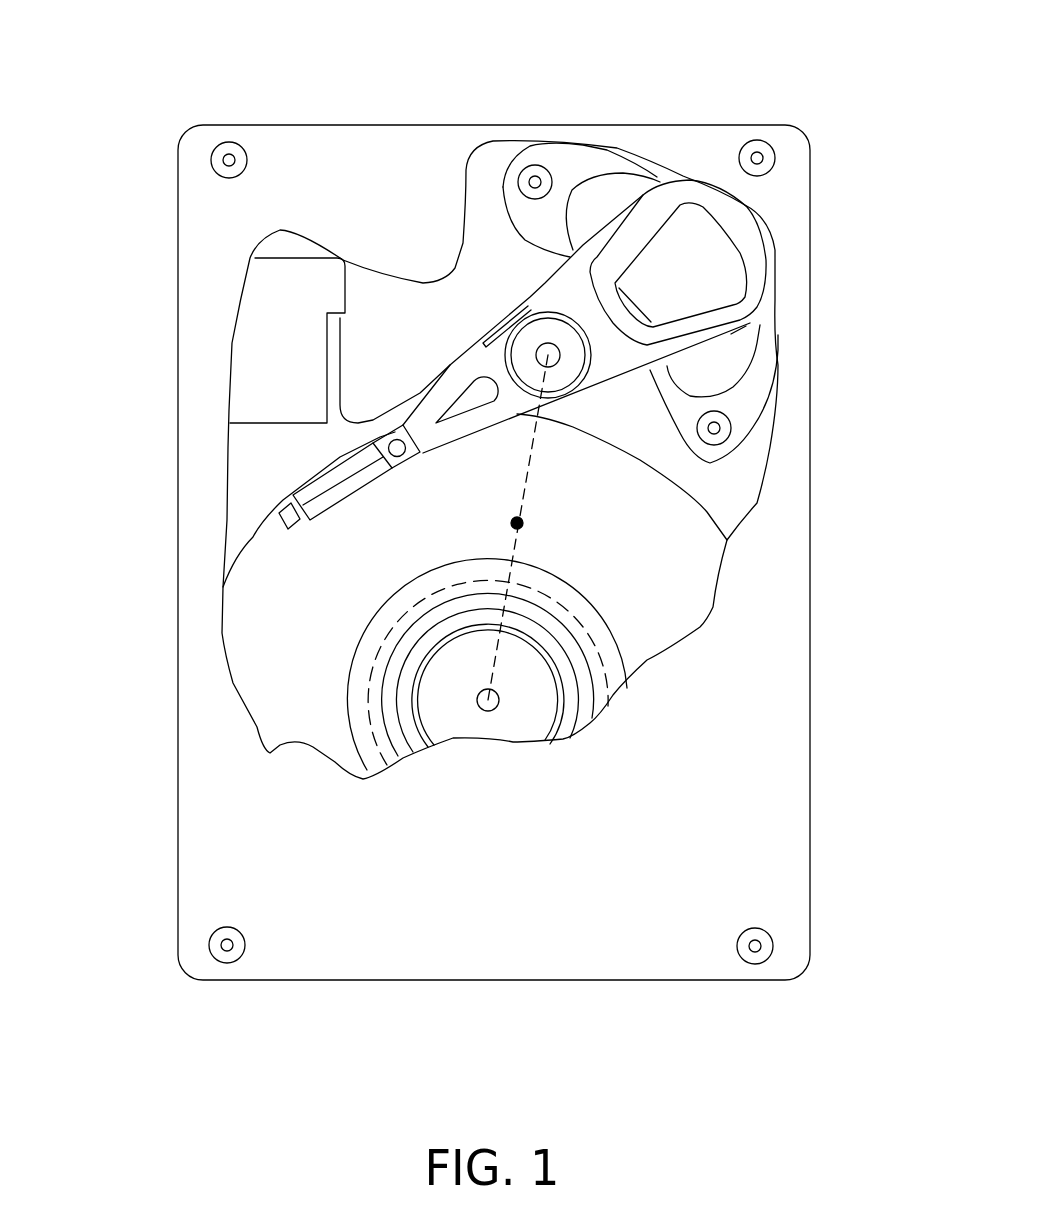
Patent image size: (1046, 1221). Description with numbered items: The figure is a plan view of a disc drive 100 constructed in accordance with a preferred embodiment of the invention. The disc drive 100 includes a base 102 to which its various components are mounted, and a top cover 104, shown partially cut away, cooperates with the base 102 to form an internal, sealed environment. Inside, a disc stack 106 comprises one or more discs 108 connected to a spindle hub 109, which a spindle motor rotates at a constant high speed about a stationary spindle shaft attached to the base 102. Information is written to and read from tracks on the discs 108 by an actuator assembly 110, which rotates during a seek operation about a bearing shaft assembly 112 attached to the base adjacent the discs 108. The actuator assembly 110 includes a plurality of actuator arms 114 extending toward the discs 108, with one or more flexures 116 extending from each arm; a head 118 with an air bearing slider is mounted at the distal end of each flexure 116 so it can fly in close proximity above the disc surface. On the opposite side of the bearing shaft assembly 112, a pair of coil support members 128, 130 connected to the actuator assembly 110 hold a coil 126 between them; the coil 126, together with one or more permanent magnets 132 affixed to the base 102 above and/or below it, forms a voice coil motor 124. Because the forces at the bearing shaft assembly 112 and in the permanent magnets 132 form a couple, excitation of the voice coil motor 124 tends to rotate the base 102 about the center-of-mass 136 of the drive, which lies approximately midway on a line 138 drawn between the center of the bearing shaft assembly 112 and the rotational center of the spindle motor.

The disc drive 100 is at (201, 72).
The base 102 is at (252, 470).
The top cover 104 is at (243, 832).
The disc stack 106 is at (710, 510).
The disc 108 is at (655, 622).
The spindle hub 109 is at (490, 703).
The actuator assembly 110 is at (464, 360).
The bearing shaft assembly 112 is at (552, 360).
The actuator arm 114 is at (433, 407).
The flexure 116 is at (347, 503).
The head 118 is at (283, 530).
The voice coil motor 124 is at (620, 168).
The coil 126 is at (758, 270).
The coil support member 128 is at (733, 331).
The coil support member 130 is at (645, 192).
The permanent magnet 132 is at (577, 215).
The center-of-mass 136 is at (520, 522).
The line 138 is at (530, 457).